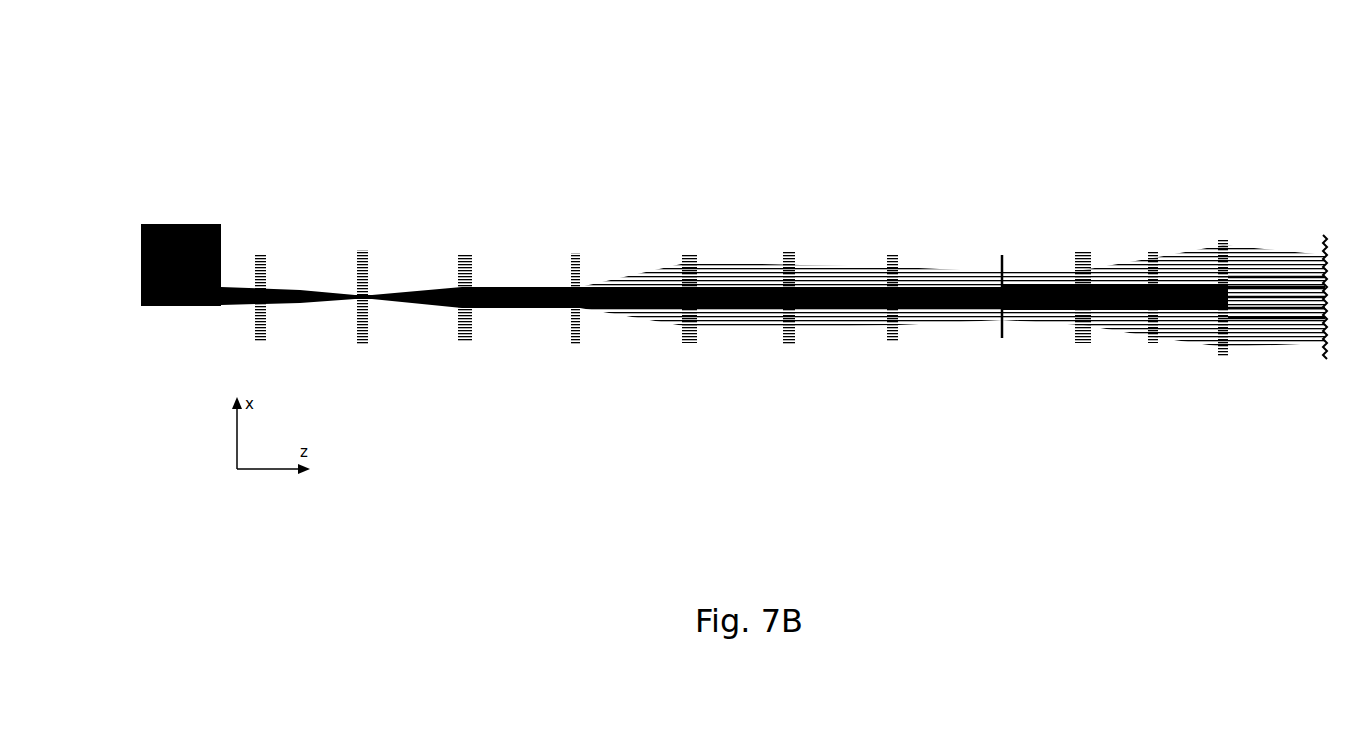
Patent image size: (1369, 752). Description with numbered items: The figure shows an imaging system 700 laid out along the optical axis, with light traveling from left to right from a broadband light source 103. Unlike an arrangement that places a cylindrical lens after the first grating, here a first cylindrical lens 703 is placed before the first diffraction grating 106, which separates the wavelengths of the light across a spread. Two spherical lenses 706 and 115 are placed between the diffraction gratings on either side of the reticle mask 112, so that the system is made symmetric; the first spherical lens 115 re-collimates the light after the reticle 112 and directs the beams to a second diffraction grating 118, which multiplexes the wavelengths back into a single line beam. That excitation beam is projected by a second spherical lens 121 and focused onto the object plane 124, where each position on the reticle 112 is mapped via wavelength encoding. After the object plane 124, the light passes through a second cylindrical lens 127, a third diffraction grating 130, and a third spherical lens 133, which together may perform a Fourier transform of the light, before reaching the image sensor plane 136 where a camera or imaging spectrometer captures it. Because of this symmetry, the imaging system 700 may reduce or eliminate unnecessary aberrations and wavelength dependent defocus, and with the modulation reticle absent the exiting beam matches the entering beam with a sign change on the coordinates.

The imaging system 700 is at (823, 144).
The broadband light source 103 is at (185, 223).
The first cylindrical lens 703 is at (266, 340).
The first diffraction grating 106 is at (358, 250).
The spherical lens 706 is at (462, 342).
The reticle mask 112 is at (573, 253).
The first spherical lens 115 is at (687, 343).
The second diffraction grating 118 is at (792, 252).
The second spherical lens 121 is at (893, 342).
The object plane 124 is at (1002, 255).
The second cylindrical lens 127 is at (1073, 343).
The third diffraction grating 130 is at (1147, 253).
The third spherical lens 133 is at (1222, 357).
The image sensor plane 136 is at (1325, 235).